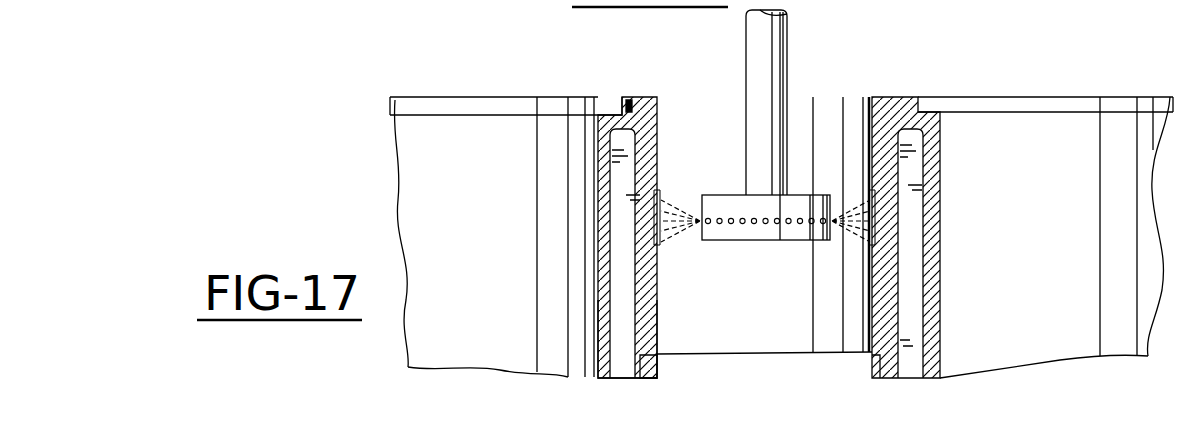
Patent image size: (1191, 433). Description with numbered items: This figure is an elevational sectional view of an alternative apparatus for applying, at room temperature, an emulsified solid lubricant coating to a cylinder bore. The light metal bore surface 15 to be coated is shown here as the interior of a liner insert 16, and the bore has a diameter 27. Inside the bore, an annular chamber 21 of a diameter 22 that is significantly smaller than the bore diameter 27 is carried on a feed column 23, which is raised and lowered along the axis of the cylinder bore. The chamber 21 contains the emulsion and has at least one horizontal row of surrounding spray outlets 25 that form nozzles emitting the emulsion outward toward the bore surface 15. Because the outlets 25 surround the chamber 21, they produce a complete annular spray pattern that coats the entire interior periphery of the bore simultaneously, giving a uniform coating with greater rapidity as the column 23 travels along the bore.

The bore surface 15 is at (658, 330).
The liner insert 16 is at (640, 148).
The annular chamber 21 is at (770, 150).
The diameter of the annular chamber 22 is at (830, 273).
The feed column 23 is at (787, 70).
The spray outlets 25 is at (742, 217).
The diameter of the cylinder bore 27 is at (871, 295).